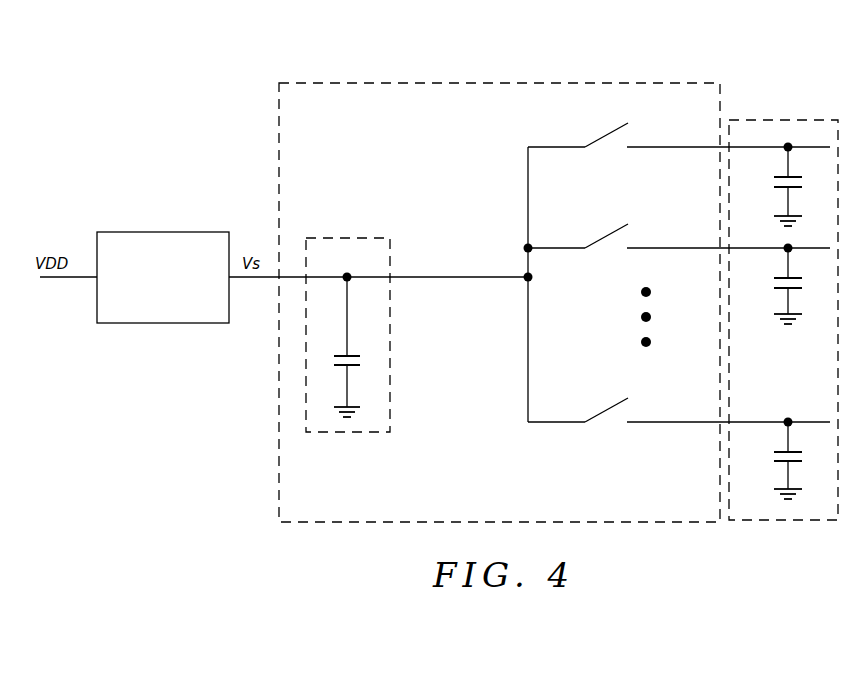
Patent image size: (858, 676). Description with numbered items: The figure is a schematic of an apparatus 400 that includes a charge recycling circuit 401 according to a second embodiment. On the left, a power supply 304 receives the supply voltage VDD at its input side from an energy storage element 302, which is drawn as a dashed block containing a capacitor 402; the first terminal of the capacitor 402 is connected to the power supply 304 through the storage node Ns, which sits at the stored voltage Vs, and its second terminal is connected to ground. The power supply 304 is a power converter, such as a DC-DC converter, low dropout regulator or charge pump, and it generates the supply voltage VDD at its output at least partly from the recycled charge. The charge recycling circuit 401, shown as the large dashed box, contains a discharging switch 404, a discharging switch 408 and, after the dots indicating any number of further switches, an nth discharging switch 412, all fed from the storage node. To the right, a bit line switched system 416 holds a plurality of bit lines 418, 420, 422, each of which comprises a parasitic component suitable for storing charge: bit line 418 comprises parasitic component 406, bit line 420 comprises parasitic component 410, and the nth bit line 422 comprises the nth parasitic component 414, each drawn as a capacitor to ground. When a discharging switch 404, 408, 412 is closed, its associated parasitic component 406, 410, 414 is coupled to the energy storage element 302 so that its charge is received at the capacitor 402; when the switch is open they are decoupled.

The apparatus 400 is at (199, 38).
The power supply 304 is at (168, 232).
The energy storage element 302 is at (340, 238).
The capacitor 402 is at (366, 360).
The charge recycling circuit 401 is at (648, 83).
The discharging switch 404 is at (596, 135).
The discharging switch 408 is at (596, 236).
The nth discharging switch 412 is at (596, 411).
The bit line 418 is at (708, 146).
The bit line 420 is at (708, 247).
The nth bit line 422 is at (708, 421).
The bit line switched system 416 is at (808, 120).
The parasitic component 406 is at (770, 185).
The parasitic component 410 is at (770, 286).
The nth parasitic component 414 is at (770, 460).